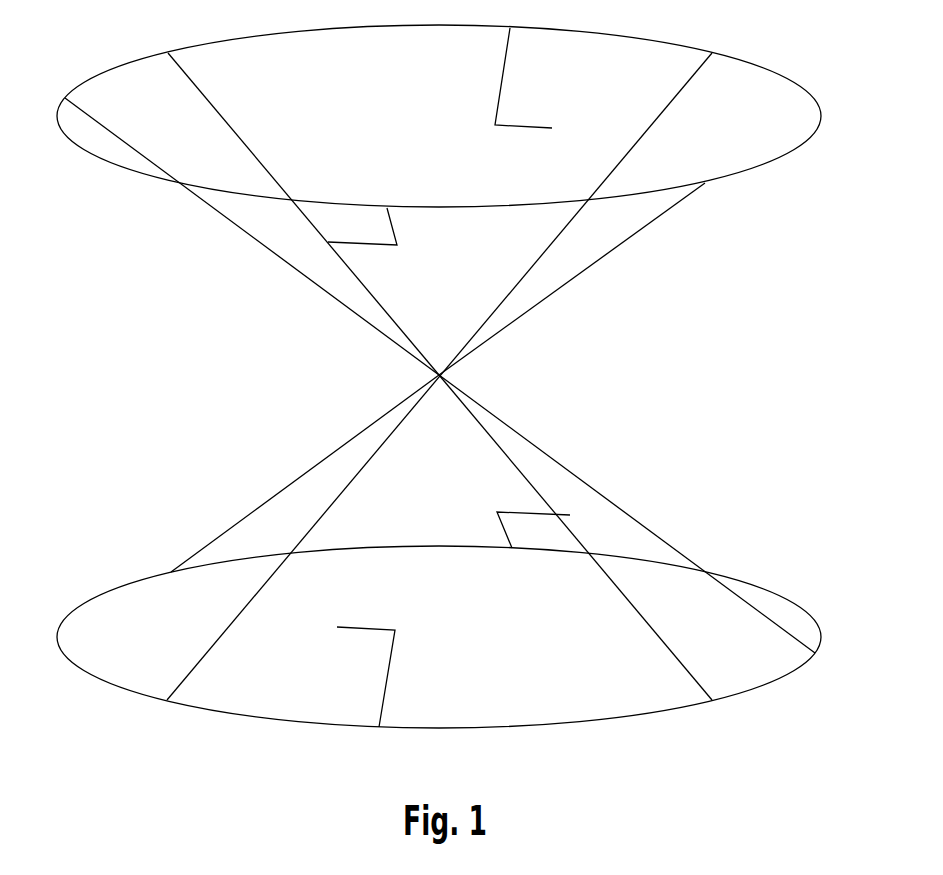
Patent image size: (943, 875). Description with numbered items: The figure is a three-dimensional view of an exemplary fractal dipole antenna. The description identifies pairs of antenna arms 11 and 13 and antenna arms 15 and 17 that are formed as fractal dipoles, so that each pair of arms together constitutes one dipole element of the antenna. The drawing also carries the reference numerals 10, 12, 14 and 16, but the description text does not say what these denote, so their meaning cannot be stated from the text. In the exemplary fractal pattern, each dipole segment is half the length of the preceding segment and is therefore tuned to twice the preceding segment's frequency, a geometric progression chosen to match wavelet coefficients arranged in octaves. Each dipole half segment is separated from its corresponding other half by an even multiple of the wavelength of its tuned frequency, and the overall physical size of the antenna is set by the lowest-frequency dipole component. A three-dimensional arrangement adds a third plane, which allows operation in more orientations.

The upper cone generatrix line 10 is at (225, 118).
The antenna arm 11 is at (505, 70).
The upper cone generatrix line 12 is at (610, 253).
The antenna arm 13 is at (242, 235).
The lower cone generatrix line 14 is at (622, 598).
The antenna arm 15 is at (388, 678).
The lower cone generatrix line 16 is at (257, 508).
The antenna arm 17 is at (633, 520).